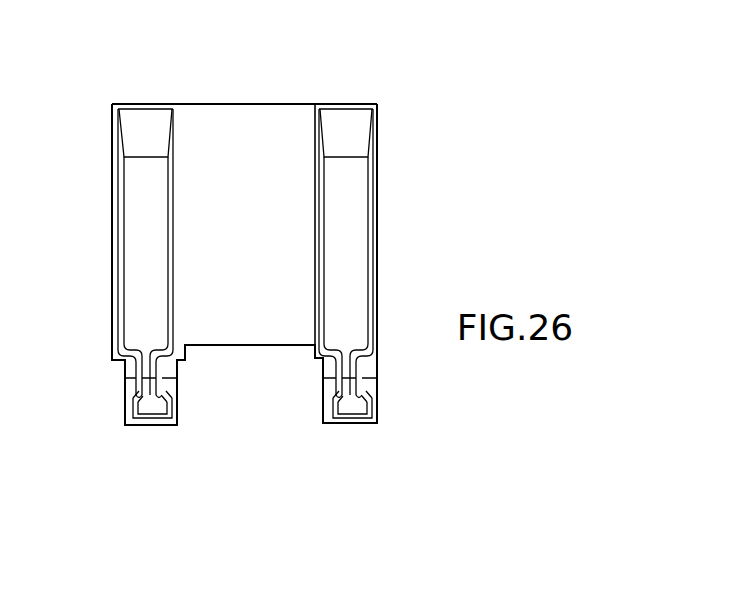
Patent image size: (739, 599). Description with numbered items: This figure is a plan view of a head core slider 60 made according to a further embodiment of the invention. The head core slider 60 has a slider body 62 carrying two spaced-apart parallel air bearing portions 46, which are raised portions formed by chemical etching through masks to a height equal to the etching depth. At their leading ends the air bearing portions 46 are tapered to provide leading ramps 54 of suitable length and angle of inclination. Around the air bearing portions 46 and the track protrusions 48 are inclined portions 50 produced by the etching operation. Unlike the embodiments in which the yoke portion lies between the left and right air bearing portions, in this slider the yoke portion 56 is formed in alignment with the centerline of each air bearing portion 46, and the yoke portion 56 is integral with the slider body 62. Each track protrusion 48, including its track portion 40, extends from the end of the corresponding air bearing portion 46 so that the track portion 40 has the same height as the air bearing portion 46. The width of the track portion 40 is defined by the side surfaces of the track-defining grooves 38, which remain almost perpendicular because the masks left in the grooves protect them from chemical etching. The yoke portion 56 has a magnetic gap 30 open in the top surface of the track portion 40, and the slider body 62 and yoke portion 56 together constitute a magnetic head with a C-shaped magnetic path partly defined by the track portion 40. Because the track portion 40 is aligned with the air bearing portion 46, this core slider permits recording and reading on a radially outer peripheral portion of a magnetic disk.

The head core slider 60 is at (366, 72).
The slider body 62 is at (263, 122).
The leading ramps 54 is at (152, 124).
The air bearing portions 46 is at (132, 203).
The inclined portions 50 is at (178, 252).
The track portion 40 is at (151, 360).
The magnetic gap 30 is at (182, 380).
The yoke portion 56 is at (119, 416).
The track-defining grooves 38 is at (137, 420).
The track protrusion 48 is at (153, 428).